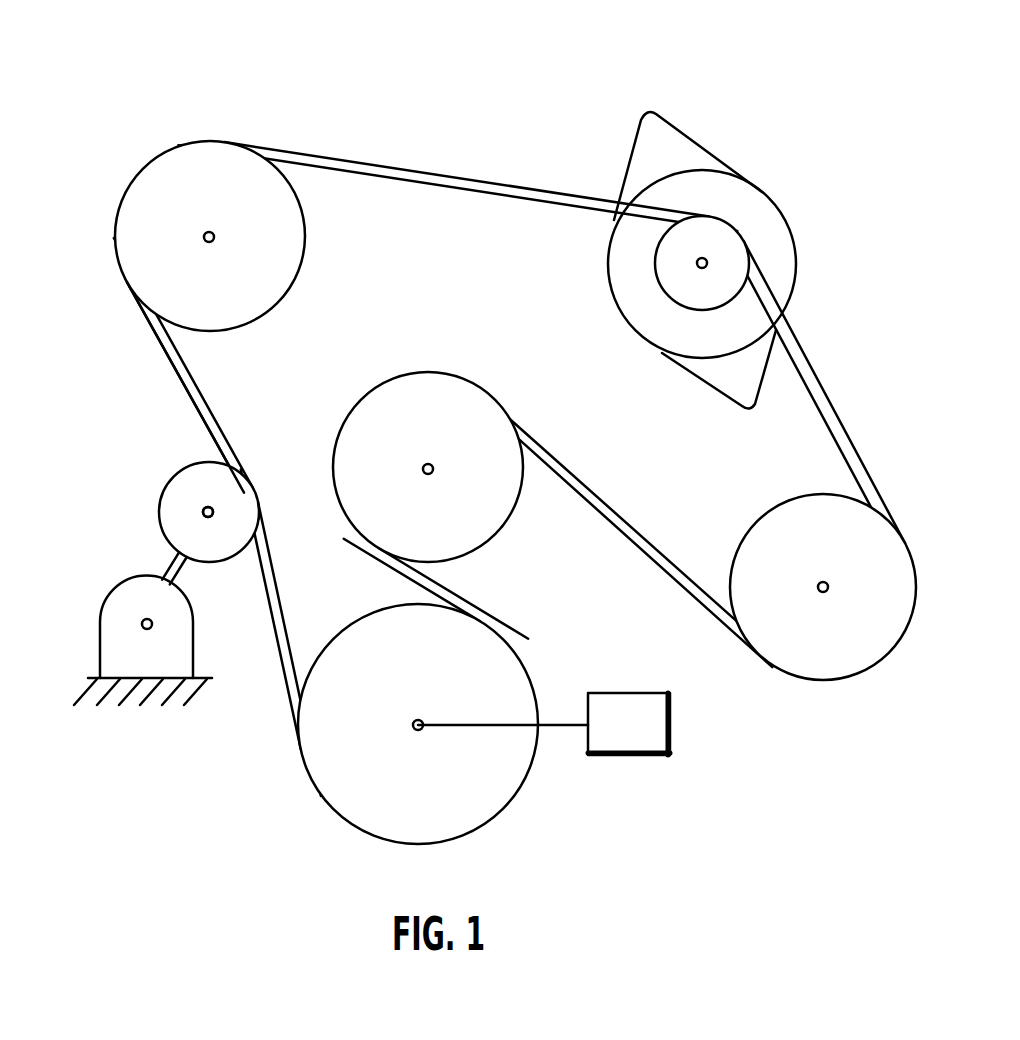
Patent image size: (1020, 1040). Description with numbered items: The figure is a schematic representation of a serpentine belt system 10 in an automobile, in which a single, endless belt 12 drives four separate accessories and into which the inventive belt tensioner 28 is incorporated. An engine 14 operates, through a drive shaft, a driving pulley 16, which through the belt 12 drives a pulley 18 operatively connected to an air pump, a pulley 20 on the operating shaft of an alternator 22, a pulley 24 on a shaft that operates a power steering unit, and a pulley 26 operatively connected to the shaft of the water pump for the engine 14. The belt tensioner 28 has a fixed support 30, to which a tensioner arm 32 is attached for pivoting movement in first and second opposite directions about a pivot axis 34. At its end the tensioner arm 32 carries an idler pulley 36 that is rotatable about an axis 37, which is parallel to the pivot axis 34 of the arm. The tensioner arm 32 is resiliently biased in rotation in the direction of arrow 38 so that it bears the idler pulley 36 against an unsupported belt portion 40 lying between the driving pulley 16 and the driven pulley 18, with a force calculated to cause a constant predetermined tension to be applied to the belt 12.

The serpentine belt system 10 is at (672, 47).
The belt 12 is at (443, 180).
The engine 14 is at (642, 738).
The driving pulley 16 is at (428, 675).
The pulley 18 is at (222, 206).
The pulley 20 is at (716, 250).
The alternator 22 is at (743, 195).
The pulley 24 is at (838, 553).
The pulley 26 is at (441, 432).
The belt tensioner 28 is at (84, 566).
The fixed support 30 is at (98, 643).
The tensioner arm 32 is at (170, 557).
The pivot axis 34 is at (152, 628).
The idler pulley 36 is at (193, 475).
The axis 37 is at (208, 512).
The arrow 38 is at (218, 630).
The unsupported belt portion 40 is at (215, 423).